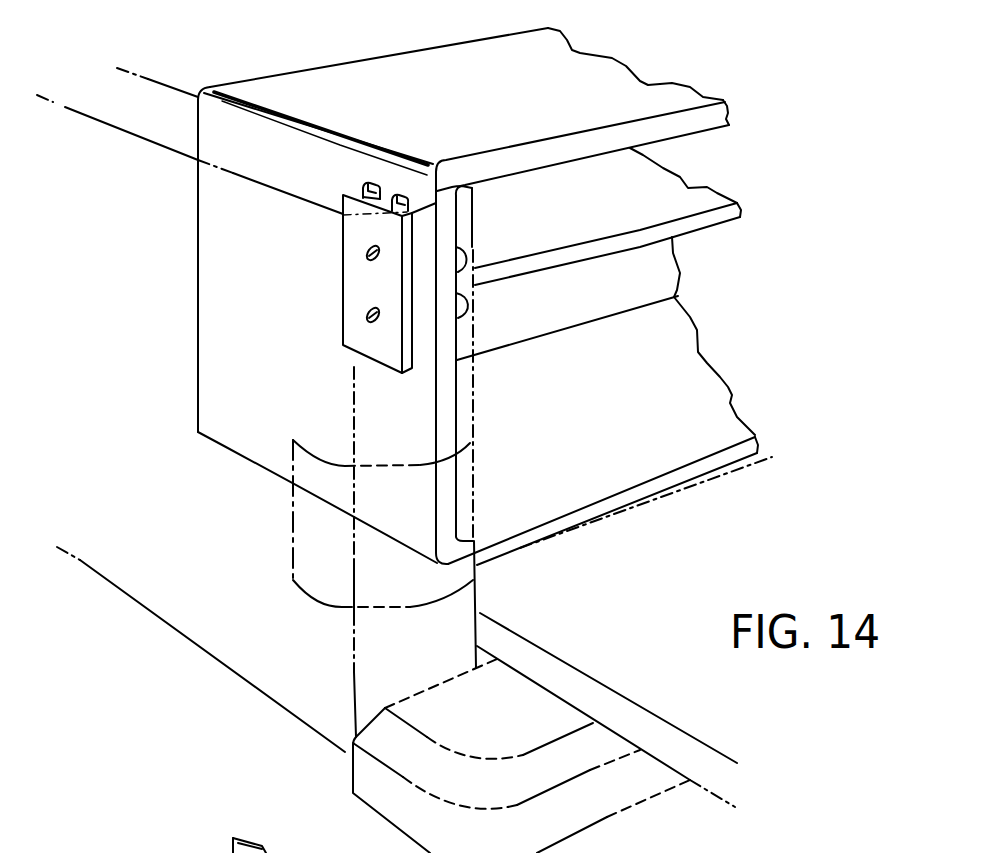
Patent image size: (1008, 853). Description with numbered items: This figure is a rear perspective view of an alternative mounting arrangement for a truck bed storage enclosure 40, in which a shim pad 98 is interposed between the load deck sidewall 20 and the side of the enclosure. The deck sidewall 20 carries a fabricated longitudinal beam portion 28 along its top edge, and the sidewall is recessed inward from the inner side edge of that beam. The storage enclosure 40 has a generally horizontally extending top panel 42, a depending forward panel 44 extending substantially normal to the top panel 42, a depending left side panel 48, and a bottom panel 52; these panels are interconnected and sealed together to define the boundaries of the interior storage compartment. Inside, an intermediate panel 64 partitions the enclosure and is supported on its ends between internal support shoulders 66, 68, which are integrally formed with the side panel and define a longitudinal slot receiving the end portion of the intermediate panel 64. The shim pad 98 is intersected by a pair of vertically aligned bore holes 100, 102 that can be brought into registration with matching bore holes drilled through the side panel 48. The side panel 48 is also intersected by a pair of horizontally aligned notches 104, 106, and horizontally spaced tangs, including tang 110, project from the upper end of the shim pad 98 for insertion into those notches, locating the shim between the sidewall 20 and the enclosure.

The deck sidewall 20 is at (247, 619).
The longitudinal beam portion 28 is at (150, 125).
The storage enclosure 40 is at (655, 66).
The top panel 42 is at (487, 112).
The depending forward panel 44 is at (657, 277).
The depending left side panel 48 is at (245, 377).
The bottom panel 52 is at (700, 402).
The intermediate panel 64 is at (683, 194).
The internal support shoulder 66 is at (466, 308).
The internal support shoulder 68 is at (466, 268).
The shim pad 98 is at (345, 273).
The bore hole 100 is at (368, 320).
The bore hole 102 is at (367, 260).
The notch 104 is at (373, 196).
The notch 106 is at (366, 187).
The tang 110 is at (220, 852).